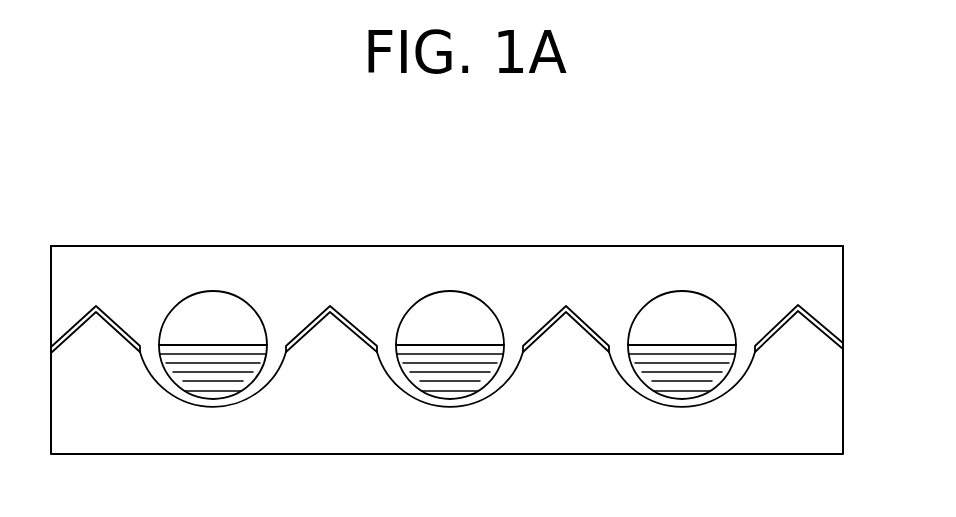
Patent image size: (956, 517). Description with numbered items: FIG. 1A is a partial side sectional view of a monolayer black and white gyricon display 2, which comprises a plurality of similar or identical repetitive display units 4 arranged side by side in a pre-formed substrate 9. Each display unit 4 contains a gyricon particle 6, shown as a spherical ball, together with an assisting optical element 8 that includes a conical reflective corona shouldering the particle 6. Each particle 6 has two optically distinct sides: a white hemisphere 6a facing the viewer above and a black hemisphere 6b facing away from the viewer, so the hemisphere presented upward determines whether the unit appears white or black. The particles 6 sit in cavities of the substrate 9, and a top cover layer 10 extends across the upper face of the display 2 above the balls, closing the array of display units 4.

The gyricon display 2 is at (95, 206).
The display unit 4 is at (665, 407).
The gyricon particle 6 is at (248, 296).
The white hemisphere 6a is at (213, 310).
The black hemisphere 6b is at (195, 377).
The assisting optical element 8 is at (96, 305).
The pre-formed substrate 9 is at (827, 418).
The top cover layer 10 is at (620, 246).